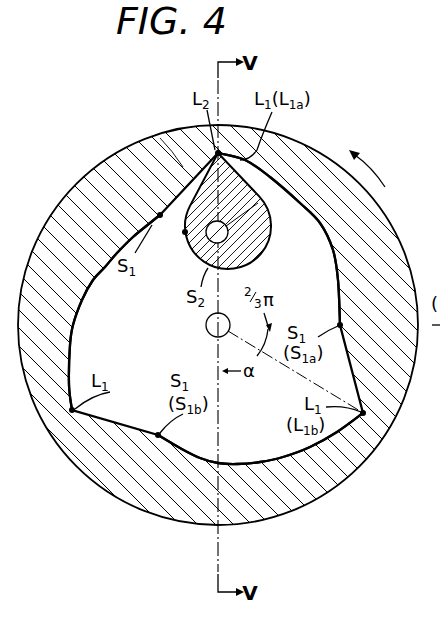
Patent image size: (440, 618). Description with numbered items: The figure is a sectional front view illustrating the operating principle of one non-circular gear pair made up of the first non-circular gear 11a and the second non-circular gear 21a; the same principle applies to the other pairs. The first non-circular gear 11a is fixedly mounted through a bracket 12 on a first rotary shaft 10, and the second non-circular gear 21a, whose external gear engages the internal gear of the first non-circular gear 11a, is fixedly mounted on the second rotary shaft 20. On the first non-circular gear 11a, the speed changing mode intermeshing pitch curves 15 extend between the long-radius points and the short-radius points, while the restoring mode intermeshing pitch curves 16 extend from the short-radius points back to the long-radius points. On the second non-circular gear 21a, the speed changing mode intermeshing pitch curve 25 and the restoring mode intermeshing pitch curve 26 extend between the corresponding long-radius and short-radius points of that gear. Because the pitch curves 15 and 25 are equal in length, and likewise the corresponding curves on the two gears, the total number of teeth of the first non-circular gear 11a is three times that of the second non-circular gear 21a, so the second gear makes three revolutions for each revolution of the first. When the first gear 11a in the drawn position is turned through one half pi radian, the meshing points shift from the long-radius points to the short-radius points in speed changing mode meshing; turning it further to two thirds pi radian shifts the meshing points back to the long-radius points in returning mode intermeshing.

The first rotary shaft 10 is at (206, 325).
The first non-circular gear 11a is at (104, 161).
The bracket 12 is at (312, 243).
The speed changing mode intermeshing pitch curves 15 is at (76, 320).
The restoring mode intermeshing pitch curves 16 is at (160, 218).
The second rotary shaft 20 is at (262, 200).
The second non-circular gear 21a is at (143, 146).
The speed changing mode intermeshing pitch curve 25 is at (258, 257).
The restoring mode intermeshing pitch curve 26 is at (186, 235).